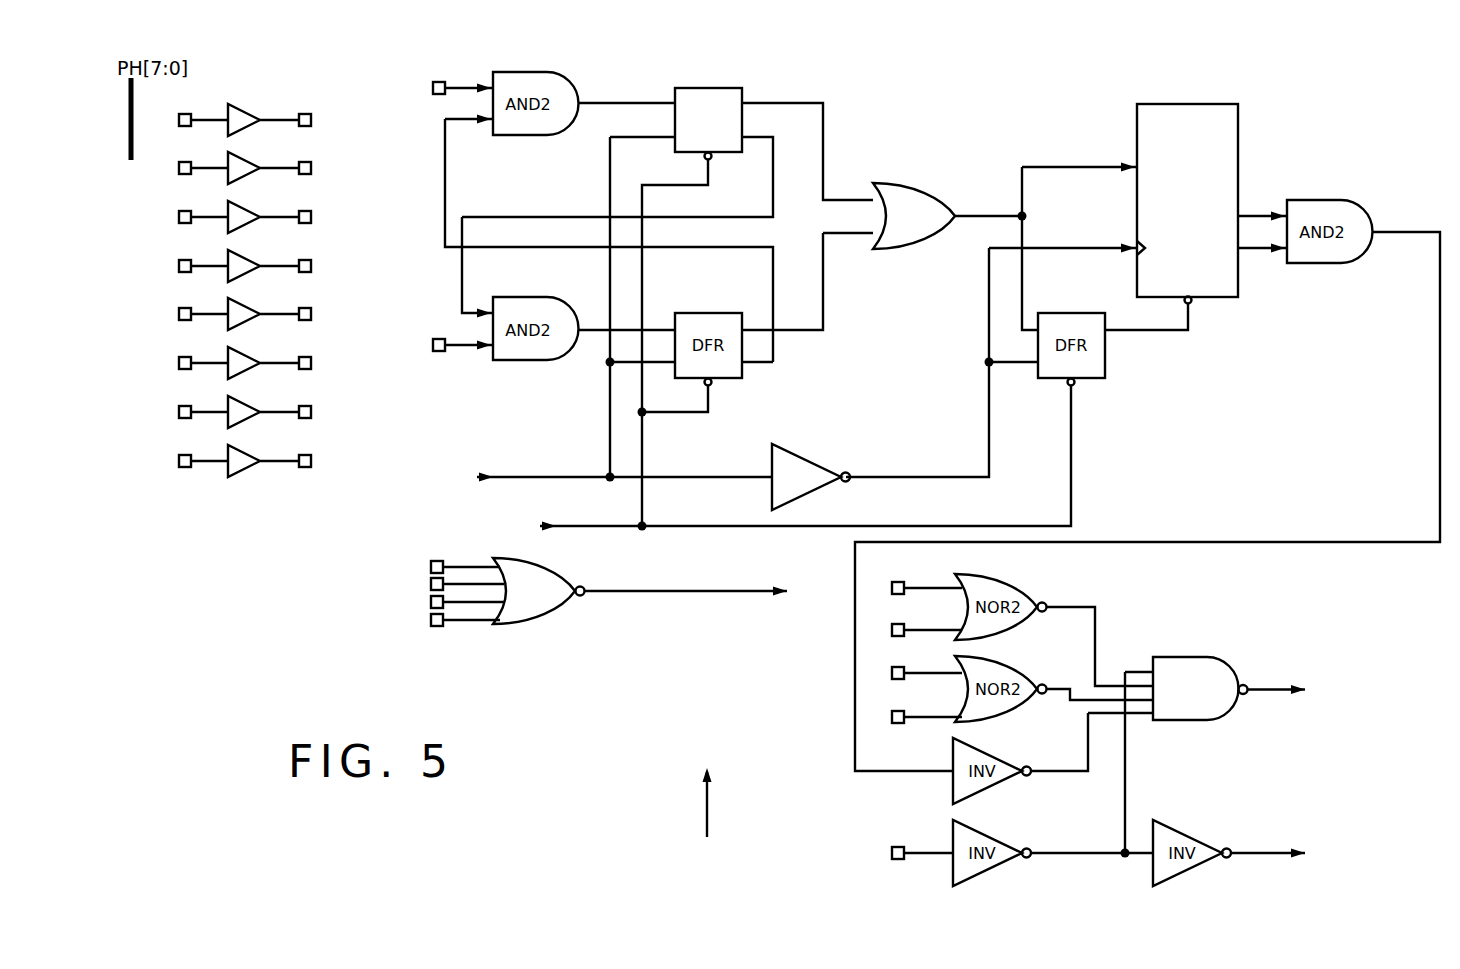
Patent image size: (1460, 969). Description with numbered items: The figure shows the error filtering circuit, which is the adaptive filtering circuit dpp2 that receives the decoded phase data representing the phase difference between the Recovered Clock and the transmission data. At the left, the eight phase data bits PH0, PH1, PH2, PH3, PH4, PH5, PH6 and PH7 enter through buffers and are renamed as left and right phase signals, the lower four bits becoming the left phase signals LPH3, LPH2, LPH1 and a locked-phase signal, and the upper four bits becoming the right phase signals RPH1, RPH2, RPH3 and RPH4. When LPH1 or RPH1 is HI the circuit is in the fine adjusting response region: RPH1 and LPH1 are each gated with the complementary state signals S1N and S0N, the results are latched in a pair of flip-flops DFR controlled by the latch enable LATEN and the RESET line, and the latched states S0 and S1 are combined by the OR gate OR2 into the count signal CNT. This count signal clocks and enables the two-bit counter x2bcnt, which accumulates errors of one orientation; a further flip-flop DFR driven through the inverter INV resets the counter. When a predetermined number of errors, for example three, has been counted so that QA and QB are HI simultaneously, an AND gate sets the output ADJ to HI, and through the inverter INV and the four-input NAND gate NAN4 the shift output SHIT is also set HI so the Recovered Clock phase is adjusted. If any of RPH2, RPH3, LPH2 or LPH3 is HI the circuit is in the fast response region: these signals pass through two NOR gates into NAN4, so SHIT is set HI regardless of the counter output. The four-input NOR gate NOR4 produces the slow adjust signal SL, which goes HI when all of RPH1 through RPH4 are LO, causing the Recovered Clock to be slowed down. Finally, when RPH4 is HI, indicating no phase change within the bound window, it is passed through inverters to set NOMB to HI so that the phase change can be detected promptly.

The phase data bit PH0 is at (236, 112).
The phase data bit PH1 is at (236, 160).
The phase data bit PH2 is at (236, 209).
The phase data bit PH3 is at (236, 258).
The phase data bit PH4 is at (238, 306).
The phase data bit PH5 is at (238, 355).
The phase data bit PH6 is at (238, 404).
The phase data bit PH7 is at (238, 453).
The right phase signal RPH1 is at (433, 89).
The left phase signal LPH1 is at (433, 346).
The S1N signal S1N is at (609, 239).
The S0N signal S0N is at (617, 227).
The D flip-flop with reset DFR is at (708, 120).
The S0 signal S0 is at (807, 139).
The S1 signal S1 is at (807, 294).
The two-input OR gate OR2 is at (914, 216).
The count signal CNT is at (1046, 247).
The counter x2bcnt is at (1187, 200).
The adjust output ADJ is at (1147, 487).
The latch enable signal LATEN is at (624, 465).
The reset signal RESET is at (775, 461).
The inverter INV is at (811, 477).
The four-input NOR gate NOR4 is at (481, 594).
The slow adjust signal SL is at (700, 592).
The right phase signal RPH2 is at (919, 575).
The right phase signal RPH3 is at (919, 617).
The left phase signal LPH2 is at (919, 661).
The left phase signal LPH3 is at (919, 705).
The four-input NAND gate NAN4 is at (1200, 688).
The shift output SHIT is at (1279, 705).
The right phase signal RPH4 is at (914, 840).
The NOMB output NOMB is at (1273, 840).
The adaptive filtering circuit dpp2 is at (669, 802).